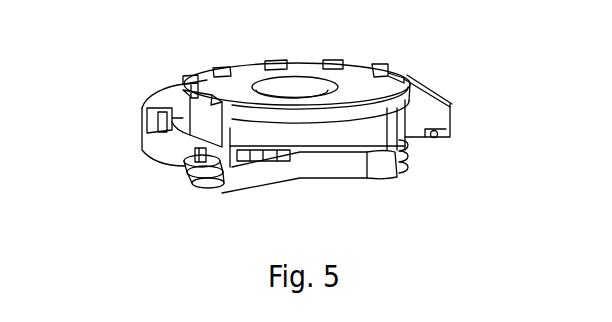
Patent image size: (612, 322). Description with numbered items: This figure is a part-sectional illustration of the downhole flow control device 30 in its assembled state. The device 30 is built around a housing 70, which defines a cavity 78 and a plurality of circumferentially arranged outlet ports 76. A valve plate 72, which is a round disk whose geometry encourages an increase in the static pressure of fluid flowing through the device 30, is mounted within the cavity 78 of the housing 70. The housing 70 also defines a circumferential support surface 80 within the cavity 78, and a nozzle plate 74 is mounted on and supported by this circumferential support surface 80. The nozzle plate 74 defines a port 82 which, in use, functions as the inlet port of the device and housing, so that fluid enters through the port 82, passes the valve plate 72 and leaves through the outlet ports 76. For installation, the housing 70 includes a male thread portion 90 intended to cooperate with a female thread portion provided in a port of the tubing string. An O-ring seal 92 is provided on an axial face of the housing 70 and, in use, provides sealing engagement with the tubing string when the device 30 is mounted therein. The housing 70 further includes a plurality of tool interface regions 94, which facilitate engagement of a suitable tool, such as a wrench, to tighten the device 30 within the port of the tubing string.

The downhole flow control device 30 is at (124, 59).
The housing 70 is at (432, 108).
The valve plate 72 is at (287, 142).
The nozzle plate 74 is at (362, 88).
The outlet ports 76 is at (382, 165).
The cavity 78 is at (407, 143).
The circumferential support surface 80 is at (185, 163).
The port 82 is at (287, 87).
The male thread portion 90 is at (198, 188).
The O-ring seal 92 is at (437, 136).
The tool interface regions 94 is at (148, 123).